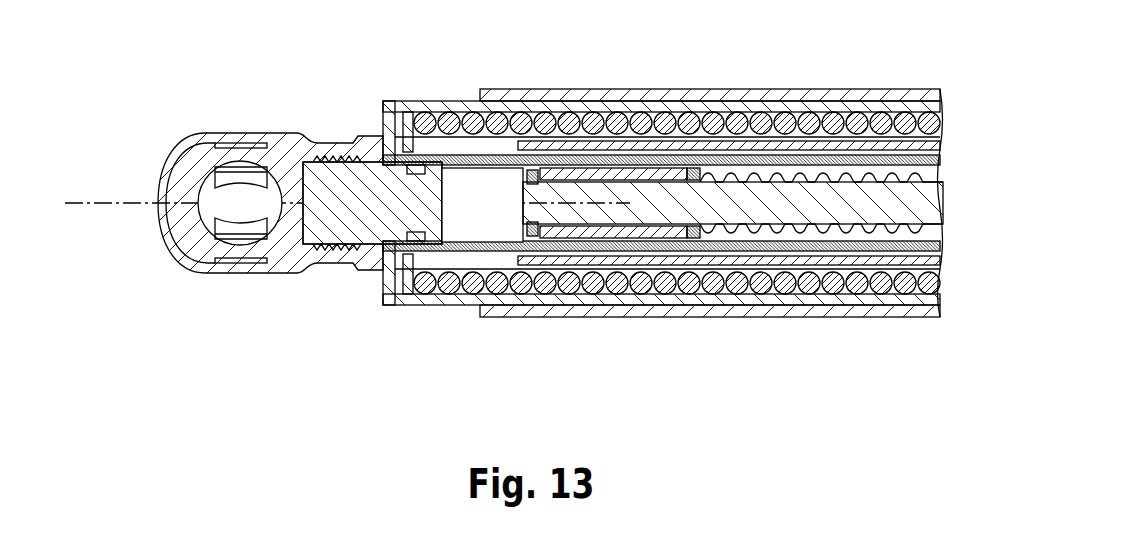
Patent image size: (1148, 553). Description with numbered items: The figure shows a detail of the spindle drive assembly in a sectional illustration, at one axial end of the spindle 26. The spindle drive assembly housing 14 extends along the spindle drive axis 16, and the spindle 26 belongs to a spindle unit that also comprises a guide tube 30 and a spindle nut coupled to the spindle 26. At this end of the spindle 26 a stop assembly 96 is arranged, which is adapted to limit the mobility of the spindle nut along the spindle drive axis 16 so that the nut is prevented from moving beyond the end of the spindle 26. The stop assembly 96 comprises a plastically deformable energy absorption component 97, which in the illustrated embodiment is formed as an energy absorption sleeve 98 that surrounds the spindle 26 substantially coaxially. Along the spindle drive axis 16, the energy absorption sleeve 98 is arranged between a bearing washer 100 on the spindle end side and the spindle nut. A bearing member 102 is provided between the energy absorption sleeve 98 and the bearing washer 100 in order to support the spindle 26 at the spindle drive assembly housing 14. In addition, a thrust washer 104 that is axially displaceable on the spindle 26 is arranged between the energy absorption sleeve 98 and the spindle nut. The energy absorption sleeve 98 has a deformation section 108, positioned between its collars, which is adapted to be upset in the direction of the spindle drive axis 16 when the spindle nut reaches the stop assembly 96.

The spindle drive assembly housing 14 is at (773, 318).
The spindle drive axis 16 is at (73, 203).
The spindle 26 is at (653, 212).
The guide tube 30 is at (707, 268).
The stop assembly 96 is at (492, 330).
The energy absorption component 97 is at (630, 133).
The energy absorption sleeve 98 is at (664, 180).
The bearing washer 100 is at (545, 256).
The bearing member 102 is at (541, 150).
The thrust washer 104 is at (700, 152).
The deformation section 108 is at (606, 165).